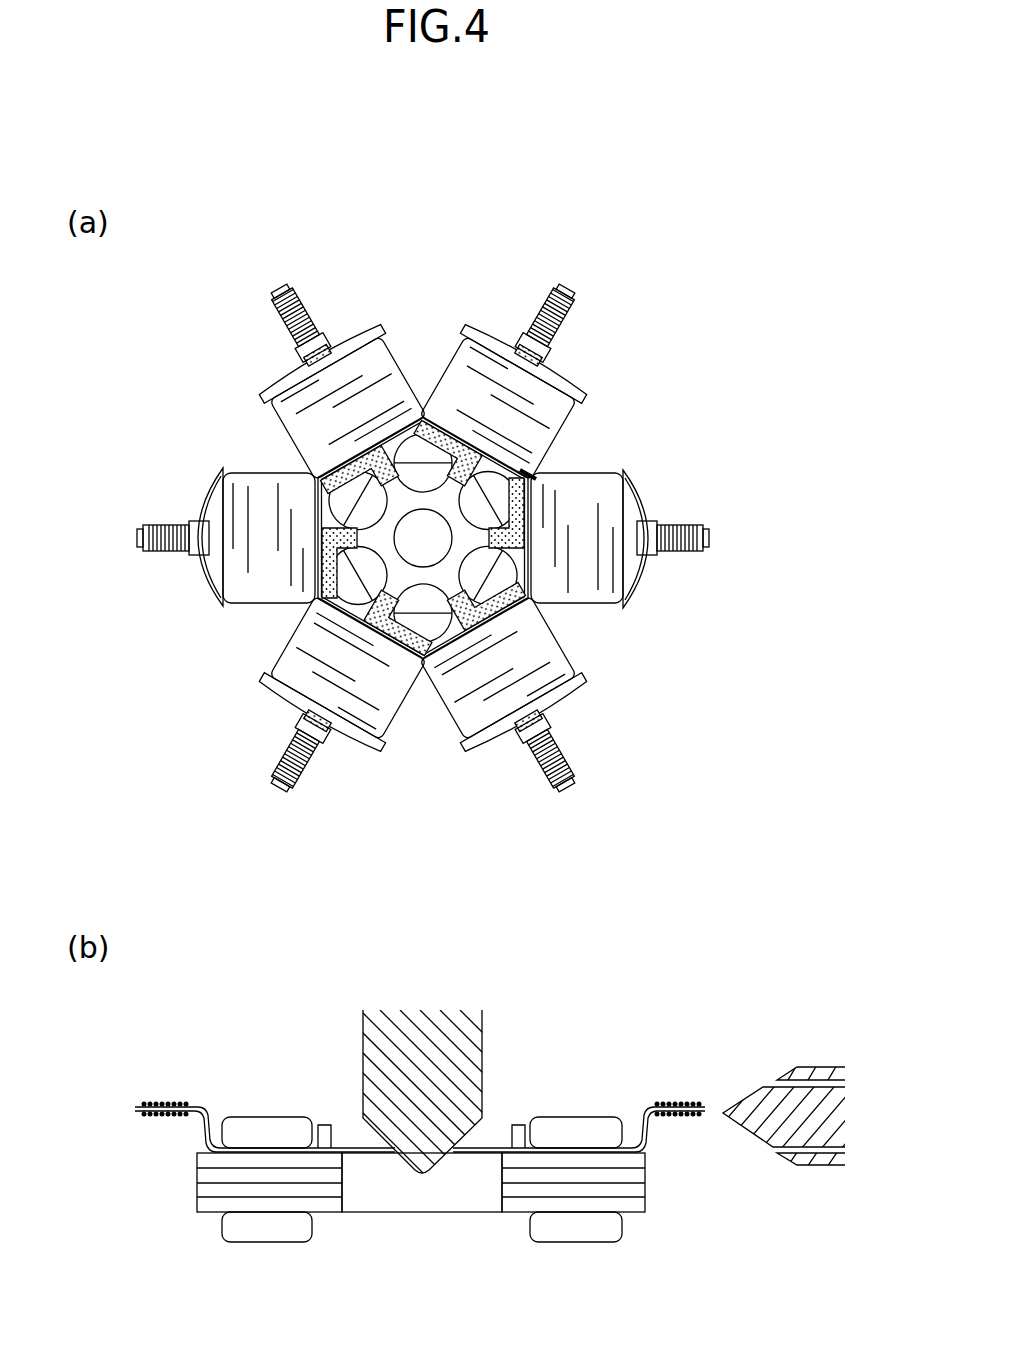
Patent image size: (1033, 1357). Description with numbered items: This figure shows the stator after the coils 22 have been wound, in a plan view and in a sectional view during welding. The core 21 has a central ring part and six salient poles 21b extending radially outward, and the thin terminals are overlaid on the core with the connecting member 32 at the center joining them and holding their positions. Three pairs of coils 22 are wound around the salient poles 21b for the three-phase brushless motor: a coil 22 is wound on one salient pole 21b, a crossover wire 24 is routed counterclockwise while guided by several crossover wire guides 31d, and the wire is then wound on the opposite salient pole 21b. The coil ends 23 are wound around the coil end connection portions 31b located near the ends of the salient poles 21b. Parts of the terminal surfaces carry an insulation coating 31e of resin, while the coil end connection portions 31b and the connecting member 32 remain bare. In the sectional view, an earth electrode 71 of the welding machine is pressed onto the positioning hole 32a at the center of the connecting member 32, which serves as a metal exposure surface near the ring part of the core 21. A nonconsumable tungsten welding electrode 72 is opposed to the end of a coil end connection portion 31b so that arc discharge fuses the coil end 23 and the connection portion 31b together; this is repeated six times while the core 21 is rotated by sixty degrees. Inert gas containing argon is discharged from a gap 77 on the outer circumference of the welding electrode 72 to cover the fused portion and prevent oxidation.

The core 21 is at (480, 756).
The salient pole 21b is at (203, 497).
The coil 22 is at (238, 592).
The coil end 23 is at (160, 552).
The crossover wire 24 is at (528, 478).
The coil end connection portion 31b is at (137, 527).
The crossover wire guide 31d is at (424, 416).
The insulation coating 31e is at (327, 552).
The connecting member 32 is at (440, 660).
The positioning hole 32a is at (413, 530).
The earth electrode 71 is at (467, 1037).
The welding electrode 72 is at (757, 1093).
The gap 77 is at (775, 1150).